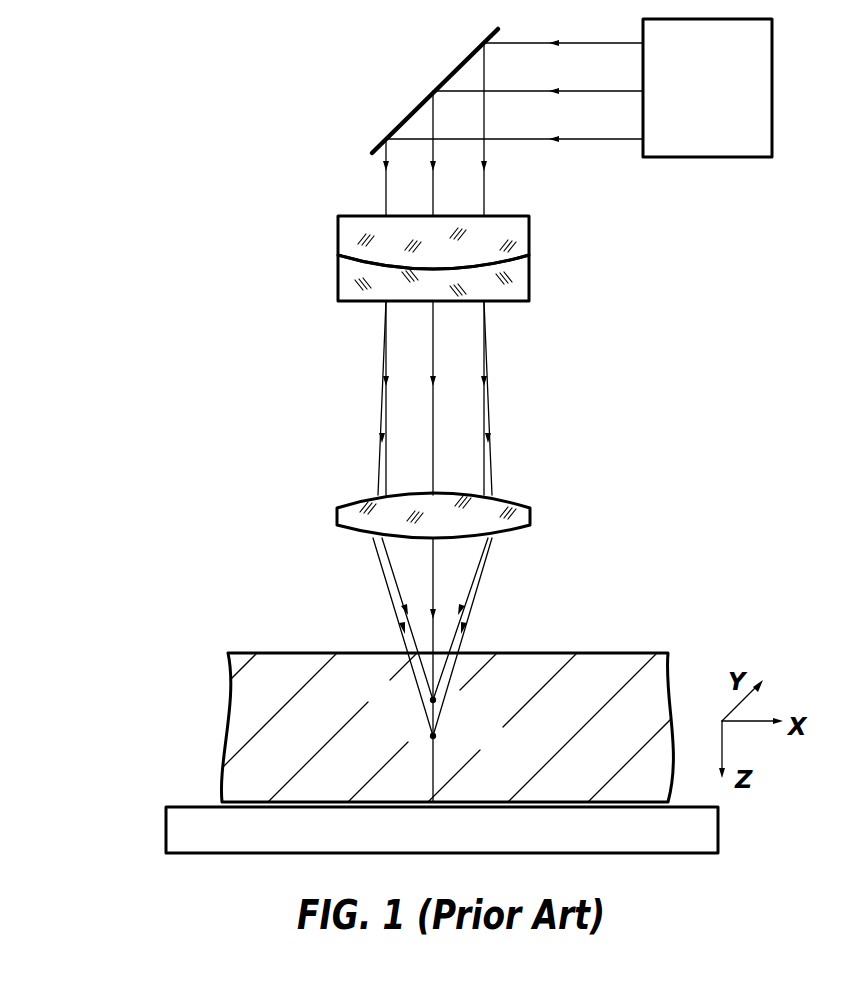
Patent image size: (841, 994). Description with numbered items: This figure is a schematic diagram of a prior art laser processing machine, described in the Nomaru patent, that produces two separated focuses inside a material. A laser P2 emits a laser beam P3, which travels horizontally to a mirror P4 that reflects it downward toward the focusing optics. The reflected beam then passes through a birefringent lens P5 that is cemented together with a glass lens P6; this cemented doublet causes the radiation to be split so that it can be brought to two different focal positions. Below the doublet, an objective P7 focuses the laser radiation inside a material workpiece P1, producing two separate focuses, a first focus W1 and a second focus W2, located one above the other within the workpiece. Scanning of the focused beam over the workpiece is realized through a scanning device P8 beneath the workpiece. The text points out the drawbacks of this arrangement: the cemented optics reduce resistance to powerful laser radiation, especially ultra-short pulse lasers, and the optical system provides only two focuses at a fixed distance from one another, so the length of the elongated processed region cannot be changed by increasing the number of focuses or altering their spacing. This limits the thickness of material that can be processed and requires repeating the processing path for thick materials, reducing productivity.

The material workpiece P1 is at (222, 705).
The laser P2 is at (718, 157).
The laser beam P3 is at (585, 150).
The mirror P4 is at (415, 106).
The birefringent lens P5 is at (336, 234).
The glass lens P6 is at (338, 283).
The objective P7 is at (337, 514).
The scanning device P8 is at (166, 825).
The first focus W1 is at (433, 700).
The second focus W2 is at (433, 736).